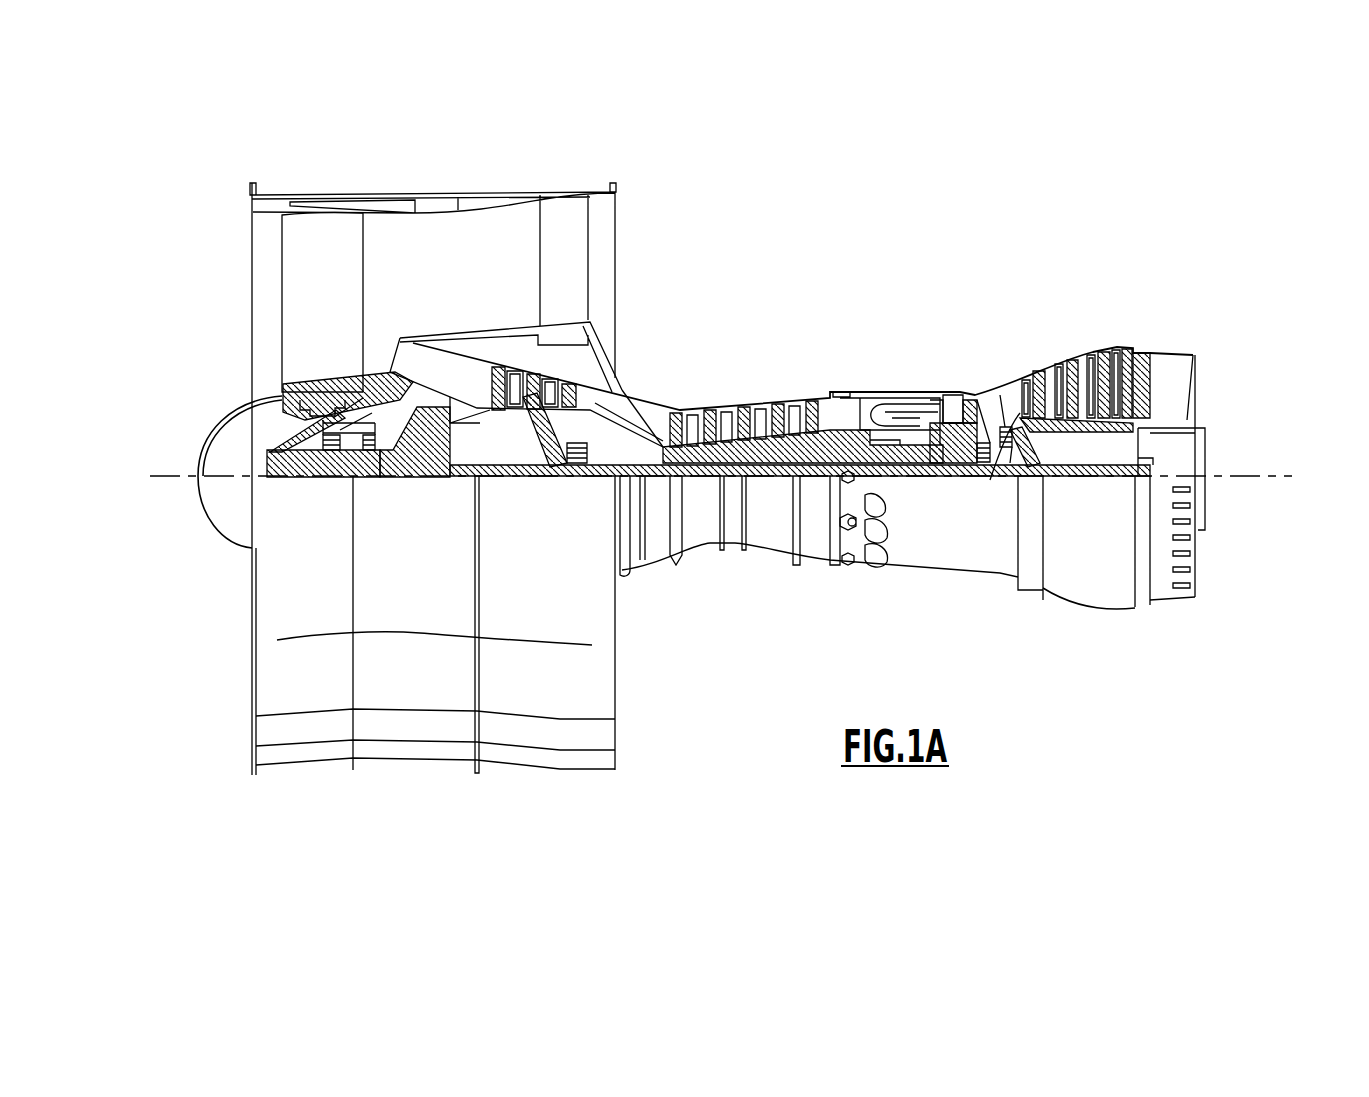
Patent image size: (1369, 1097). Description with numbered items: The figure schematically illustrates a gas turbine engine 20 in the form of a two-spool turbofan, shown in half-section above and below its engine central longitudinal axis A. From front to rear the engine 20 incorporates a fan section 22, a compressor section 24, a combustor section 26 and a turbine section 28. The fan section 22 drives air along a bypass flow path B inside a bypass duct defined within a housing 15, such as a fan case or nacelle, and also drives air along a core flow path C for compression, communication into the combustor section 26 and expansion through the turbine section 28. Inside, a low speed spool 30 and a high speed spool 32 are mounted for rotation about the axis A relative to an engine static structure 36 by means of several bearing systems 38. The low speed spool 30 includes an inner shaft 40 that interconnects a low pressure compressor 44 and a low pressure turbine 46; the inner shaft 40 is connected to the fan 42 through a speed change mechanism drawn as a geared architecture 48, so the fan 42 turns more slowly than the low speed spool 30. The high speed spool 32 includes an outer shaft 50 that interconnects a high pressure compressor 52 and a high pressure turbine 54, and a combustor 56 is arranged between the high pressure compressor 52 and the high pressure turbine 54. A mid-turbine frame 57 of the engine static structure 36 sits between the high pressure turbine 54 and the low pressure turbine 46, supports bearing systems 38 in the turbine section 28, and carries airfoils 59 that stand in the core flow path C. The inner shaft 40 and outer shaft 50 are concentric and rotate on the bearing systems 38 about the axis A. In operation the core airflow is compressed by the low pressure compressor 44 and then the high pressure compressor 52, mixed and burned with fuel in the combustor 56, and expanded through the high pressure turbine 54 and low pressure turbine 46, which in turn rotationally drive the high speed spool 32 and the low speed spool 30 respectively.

The housing 15 is at (437, 194).
The gas turbine engine 20 is at (896, 240).
The fan section 22 is at (364, 184).
The compressor section 24 is at (665, 383).
The combustor section 26 is at (889, 370).
The turbine section 28 is at (1036, 335).
The low speed spool 30 is at (773, 480).
The high speed spool 32 is at (817, 433).
The engine static structure 36 is at (813, 566).
The bearing systems 38 is at (574, 458).
The inner shaft 40 is at (630, 478).
The fan 42 is at (338, 318).
The low pressure compressor 44 is at (541, 380).
The low pressure turbine 46 is at (1082, 357).
The geared architecture 48 is at (440, 457).
The outer shaft 50 is at (897, 463).
The high pressure compressor 52 is at (753, 403).
The high pressure turbine 54 is at (958, 398).
The combustor 56 is at (889, 416).
The mid-turbine frame 57 is at (1000, 385).
The airfoils 59 is at (1025, 425).
The engine central longitudinal axis A is at (1288, 476).
The bypass flow path B is at (400, 265).
The core flow path C is at (438, 371).